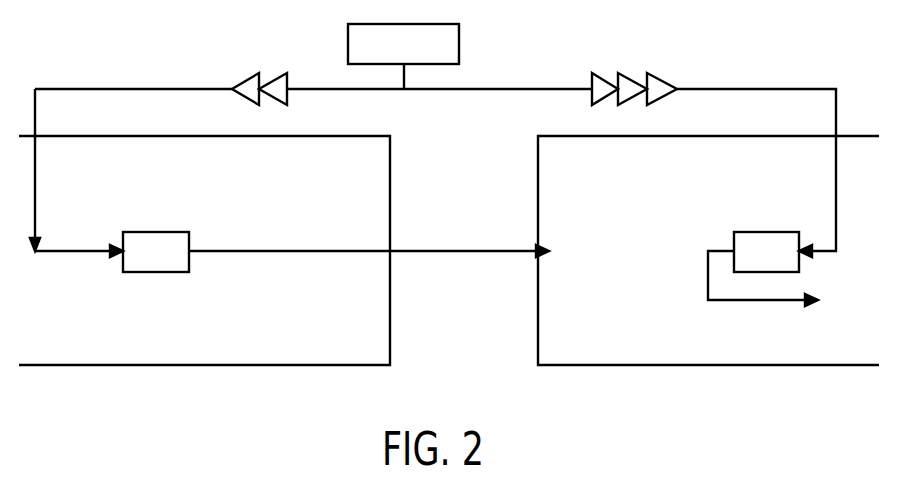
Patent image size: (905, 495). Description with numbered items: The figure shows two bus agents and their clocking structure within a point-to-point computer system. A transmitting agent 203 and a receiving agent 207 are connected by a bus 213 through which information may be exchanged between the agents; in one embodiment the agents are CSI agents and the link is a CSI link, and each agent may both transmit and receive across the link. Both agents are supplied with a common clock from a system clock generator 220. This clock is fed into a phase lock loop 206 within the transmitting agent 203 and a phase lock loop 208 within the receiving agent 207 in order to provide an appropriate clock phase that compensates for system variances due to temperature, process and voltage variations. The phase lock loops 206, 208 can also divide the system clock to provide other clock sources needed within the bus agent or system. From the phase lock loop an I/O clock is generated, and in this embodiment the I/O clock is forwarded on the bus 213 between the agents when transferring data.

The transmitting agent 203 is at (27, 321).
The phase lock loop 206 is at (138, 262).
The receiving agent 207 is at (835, 306).
The phase lock loop 208 is at (748, 262).
The bus 213 is at (369, 268).
The system clock generator 220 is at (385, 56).